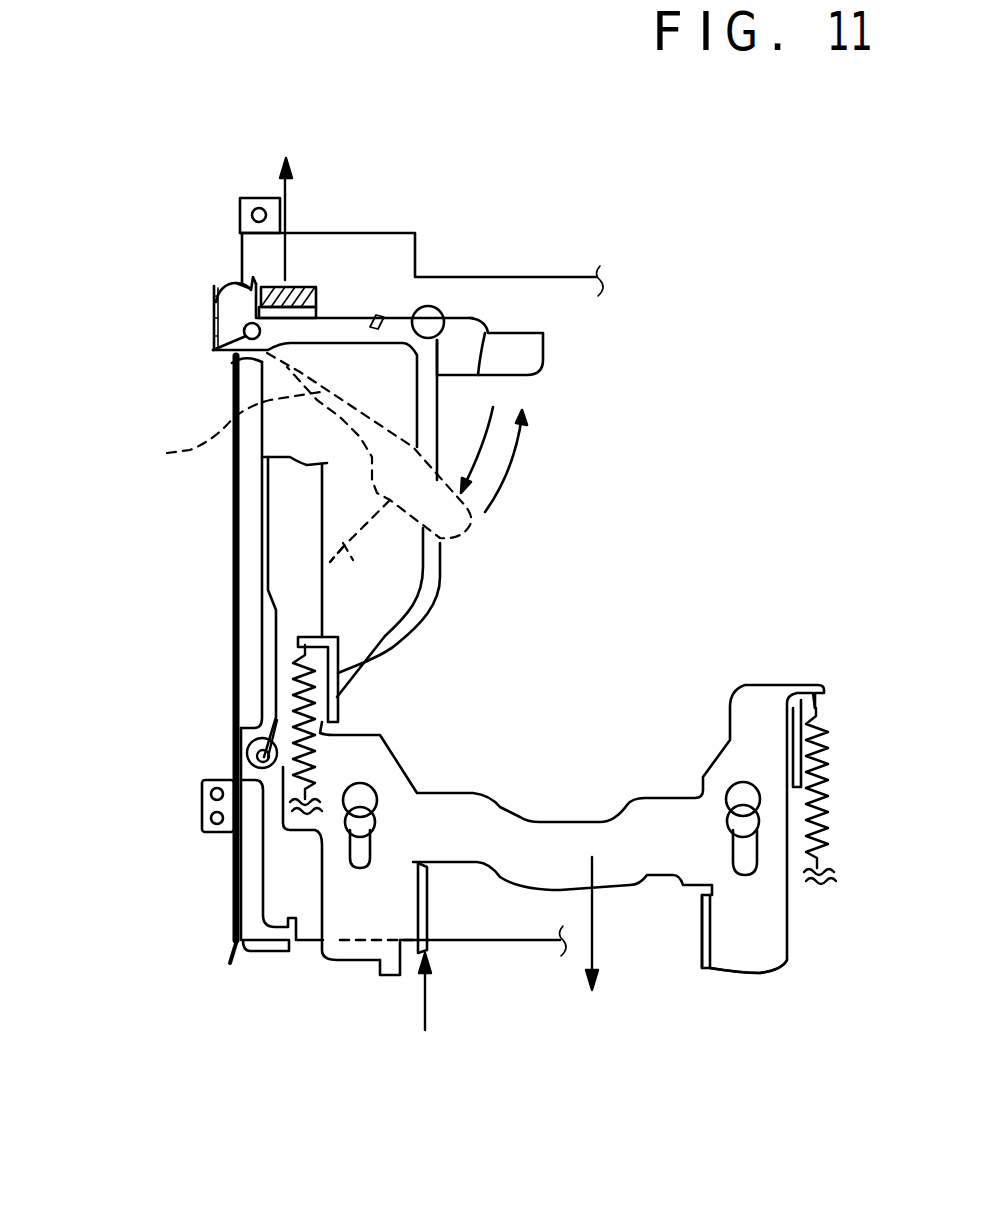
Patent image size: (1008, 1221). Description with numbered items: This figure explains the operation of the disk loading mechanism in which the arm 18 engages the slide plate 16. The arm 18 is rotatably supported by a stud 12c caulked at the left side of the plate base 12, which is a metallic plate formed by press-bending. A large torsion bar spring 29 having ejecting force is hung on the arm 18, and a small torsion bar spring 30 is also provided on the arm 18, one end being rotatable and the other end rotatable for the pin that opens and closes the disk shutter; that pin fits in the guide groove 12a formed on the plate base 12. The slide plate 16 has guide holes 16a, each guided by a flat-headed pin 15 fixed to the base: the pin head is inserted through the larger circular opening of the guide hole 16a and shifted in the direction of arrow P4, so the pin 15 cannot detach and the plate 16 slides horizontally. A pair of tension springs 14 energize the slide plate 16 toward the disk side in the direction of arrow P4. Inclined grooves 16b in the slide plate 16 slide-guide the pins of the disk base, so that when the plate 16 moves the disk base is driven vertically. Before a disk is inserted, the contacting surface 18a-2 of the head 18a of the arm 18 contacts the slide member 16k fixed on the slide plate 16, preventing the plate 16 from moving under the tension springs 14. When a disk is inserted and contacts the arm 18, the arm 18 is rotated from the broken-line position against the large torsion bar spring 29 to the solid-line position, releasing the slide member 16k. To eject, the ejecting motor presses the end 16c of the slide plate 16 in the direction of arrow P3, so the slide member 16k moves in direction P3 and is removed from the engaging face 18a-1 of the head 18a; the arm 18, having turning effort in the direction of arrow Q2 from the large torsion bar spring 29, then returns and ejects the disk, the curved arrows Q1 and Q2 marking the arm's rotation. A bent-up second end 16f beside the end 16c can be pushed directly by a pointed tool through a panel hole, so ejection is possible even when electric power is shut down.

The plate base 12 is at (595, 268).
The guide groove 12a is at (437, 600).
The stud 12c is at (215, 352).
The tension spring 14 is at (297, 693).
The flat-headed pin 15 is at (738, 858).
The slide plate 16 is at (273, 570).
The guide hole 16a is at (370, 850).
The inclined groove 16b is at (343, 648).
The end 16c is at (430, 950).
The second end 16f is at (385, 978).
The slide member 16k is at (313, 287).
The arm 18 is at (545, 343).
The head 18a is at (225, 308).
The engaging face 18a-1 is at (240, 283).
The contacting surface 18a-2 is at (212, 281).
The large torsion bar spring 29 is at (217, 433).
The small torsion bar spring 30 is at (357, 582).
The direction of arrow P3 is at (273, 193).
The direction of arrow P4 is at (566, 951).
The rotation direction Q1 is at (515, 462).
The direction of arrow Q2 is at (497, 412).